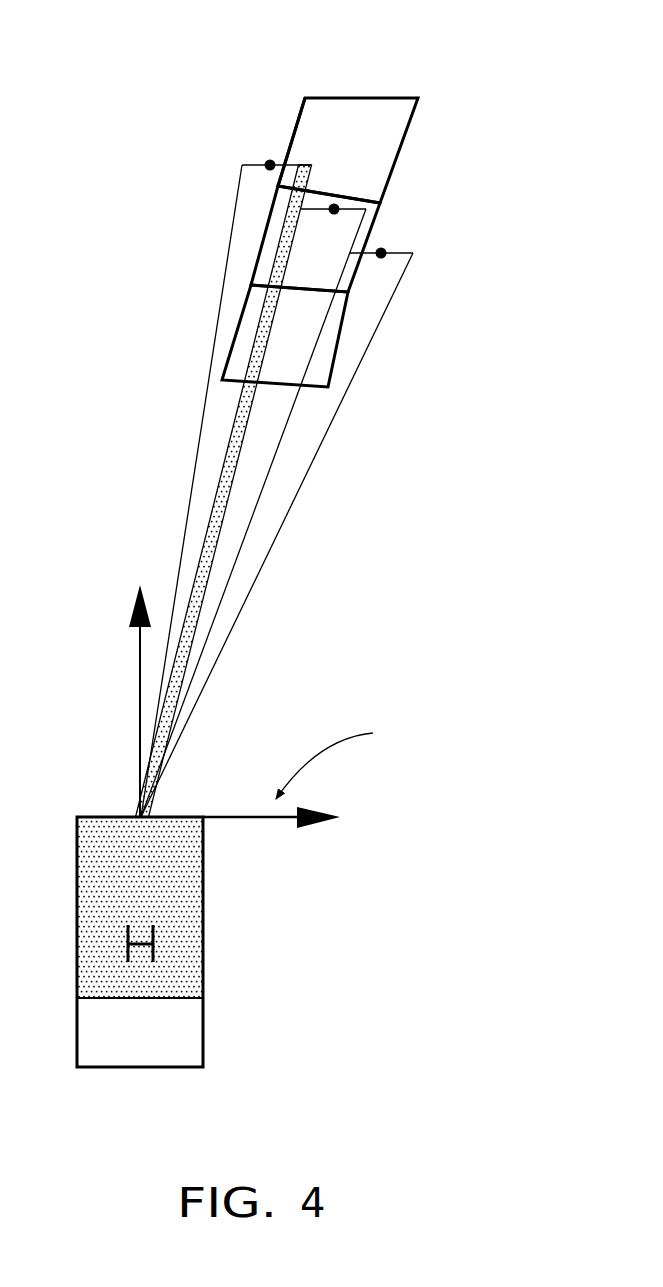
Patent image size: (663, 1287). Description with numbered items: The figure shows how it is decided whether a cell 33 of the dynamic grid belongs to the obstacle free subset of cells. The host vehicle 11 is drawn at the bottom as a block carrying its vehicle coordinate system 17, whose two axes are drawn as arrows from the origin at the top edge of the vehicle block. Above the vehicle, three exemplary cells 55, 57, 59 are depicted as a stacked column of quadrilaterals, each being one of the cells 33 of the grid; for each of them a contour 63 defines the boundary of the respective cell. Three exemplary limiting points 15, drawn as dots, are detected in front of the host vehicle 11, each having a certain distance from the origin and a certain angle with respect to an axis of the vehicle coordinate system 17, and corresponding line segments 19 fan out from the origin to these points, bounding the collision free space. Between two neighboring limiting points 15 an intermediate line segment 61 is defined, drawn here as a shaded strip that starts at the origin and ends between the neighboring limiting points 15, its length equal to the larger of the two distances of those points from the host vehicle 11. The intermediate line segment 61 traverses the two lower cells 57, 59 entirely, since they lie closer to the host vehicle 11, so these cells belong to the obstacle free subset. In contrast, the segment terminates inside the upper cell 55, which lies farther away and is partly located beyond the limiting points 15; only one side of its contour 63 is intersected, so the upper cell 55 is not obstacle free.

The host vehicle 11 is at (105, 1055).
The limiting points 15 is at (335, 204).
The vehicle coordinate system 17 is at (341, 759).
The line segments 19 is at (282, 440).
The cell 33 is at (334, 203).
The upper cell 55 is at (315, 120).
The lower cell 57 is at (335, 235).
The lower cell 59 is at (293, 350).
The intermediate line segment 61 is at (236, 409).
The contour 63 is at (287, 135).